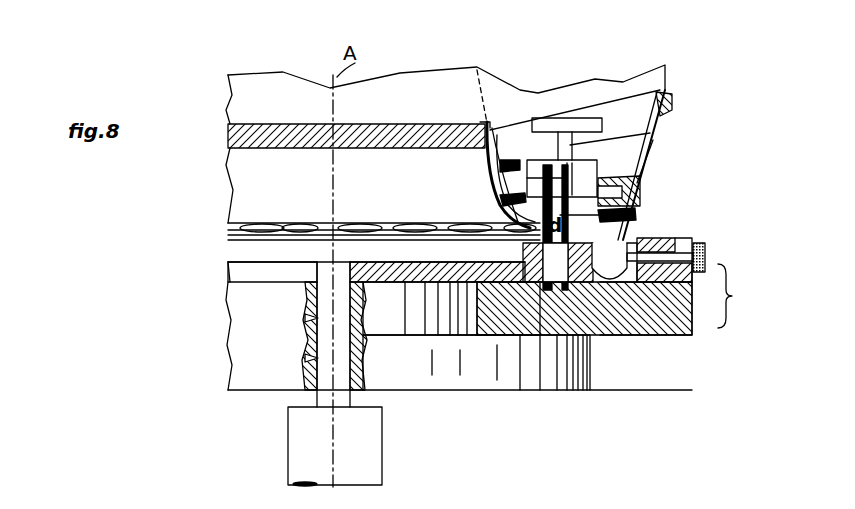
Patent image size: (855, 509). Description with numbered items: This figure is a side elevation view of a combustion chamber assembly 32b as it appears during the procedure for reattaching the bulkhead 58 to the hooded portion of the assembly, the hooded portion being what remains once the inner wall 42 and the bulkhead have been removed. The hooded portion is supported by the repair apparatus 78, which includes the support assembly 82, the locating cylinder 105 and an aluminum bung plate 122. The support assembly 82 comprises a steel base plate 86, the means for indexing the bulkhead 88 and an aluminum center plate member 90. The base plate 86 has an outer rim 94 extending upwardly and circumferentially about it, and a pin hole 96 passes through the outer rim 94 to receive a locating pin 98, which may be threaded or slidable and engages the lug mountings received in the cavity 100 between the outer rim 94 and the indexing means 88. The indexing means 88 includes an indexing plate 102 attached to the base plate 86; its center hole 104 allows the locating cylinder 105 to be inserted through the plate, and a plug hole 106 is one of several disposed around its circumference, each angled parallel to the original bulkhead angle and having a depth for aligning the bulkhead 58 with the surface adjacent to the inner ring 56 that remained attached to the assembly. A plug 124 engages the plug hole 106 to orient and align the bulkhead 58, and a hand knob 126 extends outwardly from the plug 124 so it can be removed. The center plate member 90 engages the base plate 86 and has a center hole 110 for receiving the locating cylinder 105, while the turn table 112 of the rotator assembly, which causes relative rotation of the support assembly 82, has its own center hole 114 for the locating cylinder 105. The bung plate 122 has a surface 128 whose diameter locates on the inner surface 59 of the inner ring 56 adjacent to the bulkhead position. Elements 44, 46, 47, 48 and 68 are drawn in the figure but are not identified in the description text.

The combustion chamber assembly 32b is at (673, 78).
The inner wall 42 is at (477, 72).
The seal 44 is at (660, 112).
The screen layer 46 is at (497, 223).
The screen layer 47 is at (300, 226).
The cavity 48 is at (618, 268).
The inner ring 56 is at (492, 157).
The bulkhead 58 is at (622, 185).
The inner surface 59 is at (495, 130).
The clamp 68 is at (610, 213).
The repair apparatus 78 is at (628, 385).
The support assembly 82 is at (742, 296).
The base plate 86 is at (656, 328).
The means for indexing the bulkhead 88 is at (370, 252).
The center plate member 90 is at (394, 328).
The outer rim 94 is at (668, 238).
The pin hole 96 is at (671, 276).
The locating pin 98 is at (690, 242).
The cavity 100 is at (642, 308).
The indexing plate 102 is at (432, 270).
The center hole 104 is at (318, 270).
The locating cylinder 105 is at (330, 448).
The plug hole 106 is at (510, 308).
The center hole 110 is at (318, 318).
The turn table 112 is at (420, 380).
The center hole 114 is at (318, 358).
The bung plate 122 is at (255, 124).
The plug 124 is at (550, 163).
The hand knob 126 is at (572, 122).
The surface 128 is at (482, 122).